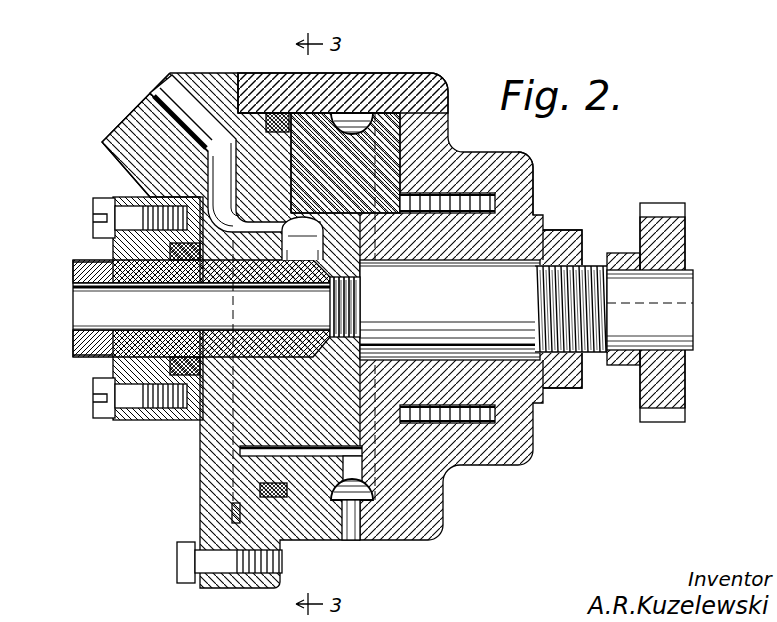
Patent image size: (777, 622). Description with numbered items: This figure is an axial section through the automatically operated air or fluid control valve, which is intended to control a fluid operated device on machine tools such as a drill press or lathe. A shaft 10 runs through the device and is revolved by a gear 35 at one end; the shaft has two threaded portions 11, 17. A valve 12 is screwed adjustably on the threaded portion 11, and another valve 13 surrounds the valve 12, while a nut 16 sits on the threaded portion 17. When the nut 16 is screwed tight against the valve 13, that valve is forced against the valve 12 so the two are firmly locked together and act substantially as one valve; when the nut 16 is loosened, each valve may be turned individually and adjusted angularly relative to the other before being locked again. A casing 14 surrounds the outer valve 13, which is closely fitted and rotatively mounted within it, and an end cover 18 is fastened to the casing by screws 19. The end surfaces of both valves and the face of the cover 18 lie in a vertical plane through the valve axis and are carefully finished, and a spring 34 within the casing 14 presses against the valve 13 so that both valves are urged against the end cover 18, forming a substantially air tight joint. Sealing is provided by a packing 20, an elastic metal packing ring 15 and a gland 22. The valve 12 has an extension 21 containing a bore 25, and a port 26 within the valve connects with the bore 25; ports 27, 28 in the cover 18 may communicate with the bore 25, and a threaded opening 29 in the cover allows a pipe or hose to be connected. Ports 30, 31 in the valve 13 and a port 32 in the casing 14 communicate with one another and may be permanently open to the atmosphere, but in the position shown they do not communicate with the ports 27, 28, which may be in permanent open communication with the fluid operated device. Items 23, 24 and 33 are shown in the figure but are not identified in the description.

The shaft 10 is at (493, 272).
The threaded portion of the shaft 11 is at (345, 307).
The valve 12 is at (347, 197).
The valve 13 is at (387, 140).
The casing 14 is at (393, 93).
The elastic metal packing ring 15 is at (287, 110).
The nut 16 is at (562, 256).
The threaded portion of the shaft 17 is at (585, 270).
The end cover 18 is at (215, 442).
The screws 19 is at (178, 560).
The packing 20 is at (232, 513).
The extension of valve 12 21 is at (105, 354).
The gland 22 is at (128, 382).
The screws 23 is at (93, 200).
The packing 24 is at (190, 406).
The bore 25 is at (90, 308).
The port 26 is at (312, 268).
The port 27 is at (223, 163).
The port 28 is at (193, 127).
The threaded opening 29 is at (142, 103).
The port 30 is at (310, 457).
The port 31 is at (363, 490).
The port 32 is at (352, 527).
The packing rings 33 is at (497, 195).
The spring 34 is at (533, 175).
The gear 35 is at (672, 252).